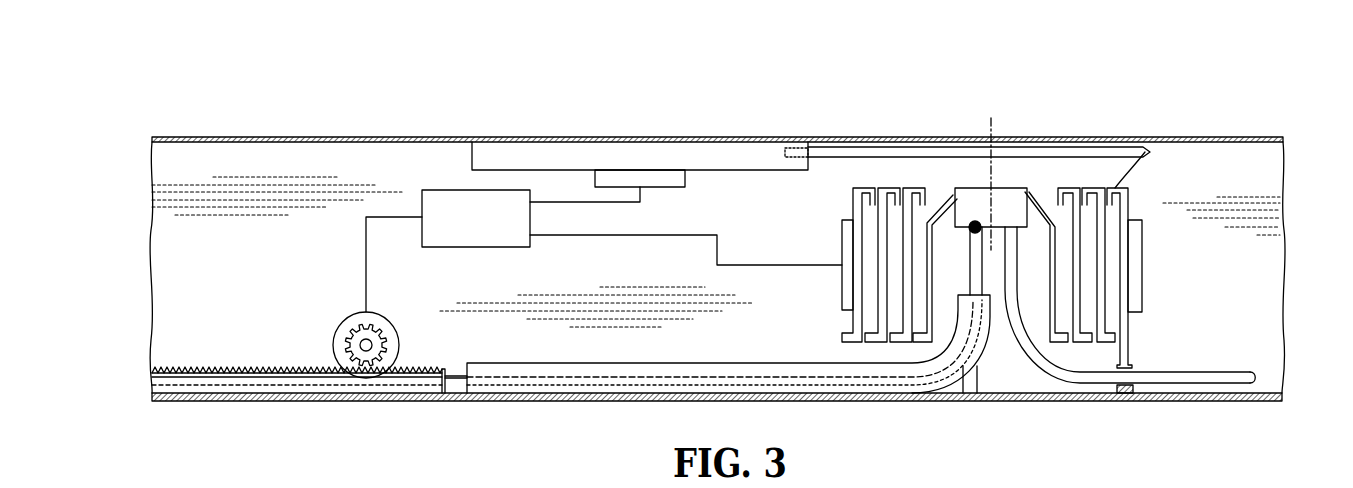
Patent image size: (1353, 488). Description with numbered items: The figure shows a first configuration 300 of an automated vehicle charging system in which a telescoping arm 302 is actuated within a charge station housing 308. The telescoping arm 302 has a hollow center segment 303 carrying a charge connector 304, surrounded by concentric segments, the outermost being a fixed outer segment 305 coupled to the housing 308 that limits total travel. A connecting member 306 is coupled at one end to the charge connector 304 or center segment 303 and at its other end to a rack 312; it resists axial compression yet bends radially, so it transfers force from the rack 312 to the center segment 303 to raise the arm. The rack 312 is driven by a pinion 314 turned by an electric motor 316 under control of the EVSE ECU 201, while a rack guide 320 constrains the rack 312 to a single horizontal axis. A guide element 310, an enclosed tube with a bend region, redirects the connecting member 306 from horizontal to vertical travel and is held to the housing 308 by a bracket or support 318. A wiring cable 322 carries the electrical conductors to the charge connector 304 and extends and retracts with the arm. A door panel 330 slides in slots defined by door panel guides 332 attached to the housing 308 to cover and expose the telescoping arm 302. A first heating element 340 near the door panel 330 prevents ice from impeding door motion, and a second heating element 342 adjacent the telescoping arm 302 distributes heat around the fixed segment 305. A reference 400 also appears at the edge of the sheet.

The first configuration 300 is at (1178, 77).
The telescoping arm 302 is at (1006, 87).
The center segment 303 is at (1050, 207).
The charge connector 304 is at (981, 188).
The fixed outer segment 305 is at (1147, 152).
The connecting member 306 is at (967, 263).
The charge station housing 308 is at (352, 137).
The guide element 310 is at (742, 362).
The rack 312 is at (420, 365).
The pinion 314 is at (344, 326).
The electric motor 316 is at (352, 315).
The bracket/support 318 is at (977, 375).
The rack guide 320 is at (183, 393).
The wiring cable 322 is at (1050, 207).
The door panel 330 is at (842, 157).
The door panel guide 332 is at (565, 155).
The first heating element 340 is at (648, 175).
The second heating element 342 is at (842, 250).
The EVSE ECU 201 is at (462, 190).
The electronic device 400 is at (1200, 487).